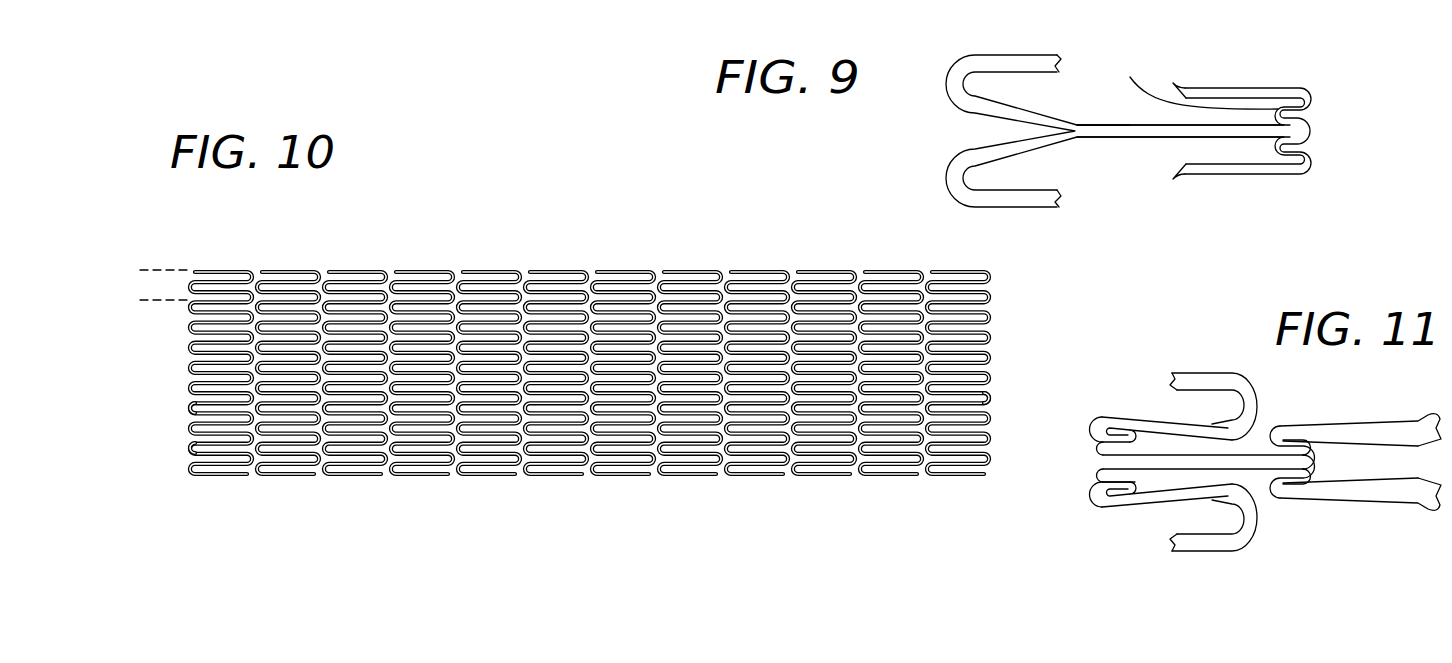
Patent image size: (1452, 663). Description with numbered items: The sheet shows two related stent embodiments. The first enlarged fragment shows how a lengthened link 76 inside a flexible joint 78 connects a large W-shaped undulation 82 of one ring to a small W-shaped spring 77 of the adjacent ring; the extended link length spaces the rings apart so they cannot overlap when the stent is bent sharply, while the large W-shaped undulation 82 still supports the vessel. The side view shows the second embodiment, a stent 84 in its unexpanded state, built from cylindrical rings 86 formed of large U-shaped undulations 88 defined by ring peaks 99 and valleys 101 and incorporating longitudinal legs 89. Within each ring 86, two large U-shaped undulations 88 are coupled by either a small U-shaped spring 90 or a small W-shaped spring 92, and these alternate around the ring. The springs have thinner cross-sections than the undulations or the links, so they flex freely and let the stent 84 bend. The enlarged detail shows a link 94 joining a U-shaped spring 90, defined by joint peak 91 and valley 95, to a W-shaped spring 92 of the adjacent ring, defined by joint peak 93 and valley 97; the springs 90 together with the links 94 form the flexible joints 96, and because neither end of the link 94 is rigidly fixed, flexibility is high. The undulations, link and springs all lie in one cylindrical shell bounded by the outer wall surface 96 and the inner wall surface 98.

In FIG. 9, the link 76 is at (1117, 125).
In FIG. 9, the small W-shaped spring 77 is at (1303, 116).
In FIG. 9, the flexible joint 78 is at (1150, 125).
In FIG. 9, the W-shaped undulation 82 is at (950, 90).
In FIG. 10, the stent 84 is at (263, 270).
In FIG. 10, the cylindrical ring 86 is at (553, 268).
In FIG. 10, the U-shaped undulation 88 is at (247, 355).
In FIG. 10, the U-shaped spring 90 is at (990, 398).
In FIG. 11, the U-shaped spring 90 is at (1313, 468).
In FIG. 11, the joint peak 91 is at (1317, 447).
In FIG. 10, the W-shaped spring 92 is at (190, 407).
In FIG. 11, the W-shaped spring 92 is at (1092, 453).
In FIG. 11, the joint peak 93 is at (1138, 442).
In FIG. 10, the link 94 is at (652, 290).
In FIG. 11, the link 94 is at (1148, 473).
In FIG. 11, the joint valley 95 is at (1258, 476).
In FIG. 10, the cylindrical outer wall surface 96 is at (157, 268).
In FIG. 11, the joint valley 97 is at (1100, 497).
In FIG. 10, the cylindrical inner wall surface 98 is at (168, 302).
In FIG. 10, the ring peak 99 is at (992, 320).
In FIG. 11, the longitudinal leg 89 is at (1107, 513).
In FIG. 10, the ring valley 101 is at (190, 447).